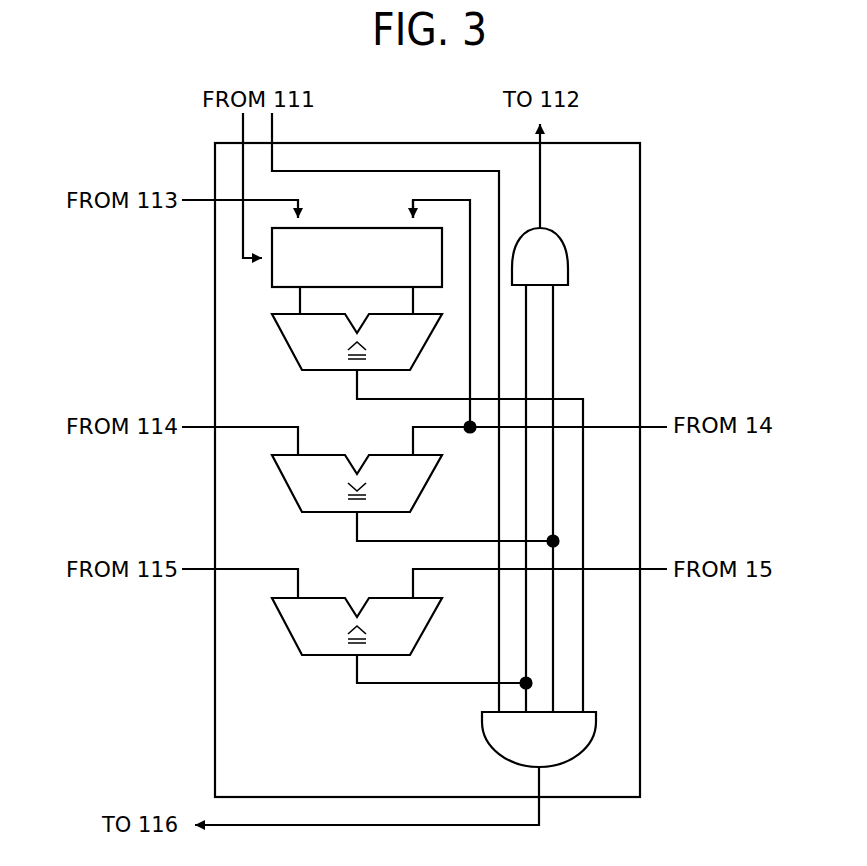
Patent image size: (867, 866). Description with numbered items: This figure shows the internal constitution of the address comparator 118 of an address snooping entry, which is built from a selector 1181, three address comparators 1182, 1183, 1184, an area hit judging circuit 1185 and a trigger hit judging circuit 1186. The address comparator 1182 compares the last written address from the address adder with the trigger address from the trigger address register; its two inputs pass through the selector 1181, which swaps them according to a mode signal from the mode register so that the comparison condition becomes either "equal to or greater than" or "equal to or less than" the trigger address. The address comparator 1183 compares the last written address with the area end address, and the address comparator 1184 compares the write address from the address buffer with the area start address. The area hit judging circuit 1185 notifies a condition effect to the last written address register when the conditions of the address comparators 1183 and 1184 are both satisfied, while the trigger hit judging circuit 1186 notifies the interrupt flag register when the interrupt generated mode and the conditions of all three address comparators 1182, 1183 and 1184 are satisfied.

The address comparator 118 is at (640, 168).
The selector 1181 is at (357, 228).
The address comparator 1182 is at (326, 371).
The address comparator 1183 is at (326, 513).
The address comparator 1184 is at (326, 656).
The area hit judging circuit 1185 is at (556, 233).
The trigger hit judging circuit 1186 is at (491, 745).